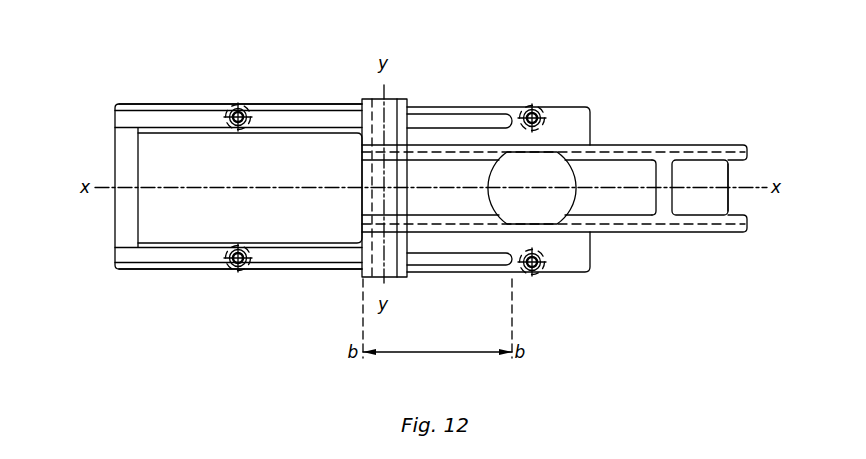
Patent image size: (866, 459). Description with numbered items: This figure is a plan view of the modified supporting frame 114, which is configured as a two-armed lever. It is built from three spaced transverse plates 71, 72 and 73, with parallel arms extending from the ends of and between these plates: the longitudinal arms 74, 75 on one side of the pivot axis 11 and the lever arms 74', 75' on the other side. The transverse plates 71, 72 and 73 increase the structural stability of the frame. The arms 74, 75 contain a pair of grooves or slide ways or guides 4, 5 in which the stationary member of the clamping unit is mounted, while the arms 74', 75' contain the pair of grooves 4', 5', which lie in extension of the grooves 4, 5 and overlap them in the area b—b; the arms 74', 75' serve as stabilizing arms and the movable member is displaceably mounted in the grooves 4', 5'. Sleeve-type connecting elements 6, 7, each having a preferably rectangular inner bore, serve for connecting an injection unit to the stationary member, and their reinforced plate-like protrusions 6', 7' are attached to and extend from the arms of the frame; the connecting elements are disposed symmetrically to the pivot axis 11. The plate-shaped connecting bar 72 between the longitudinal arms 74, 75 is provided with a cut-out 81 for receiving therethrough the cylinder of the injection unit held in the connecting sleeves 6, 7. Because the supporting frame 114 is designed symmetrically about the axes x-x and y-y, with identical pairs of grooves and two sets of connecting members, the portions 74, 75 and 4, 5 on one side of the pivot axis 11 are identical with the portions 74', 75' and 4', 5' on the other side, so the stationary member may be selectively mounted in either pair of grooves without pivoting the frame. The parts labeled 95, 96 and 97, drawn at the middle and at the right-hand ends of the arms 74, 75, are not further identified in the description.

The transverse plate 71 is at (128, 217).
The arm 75' is at (240, 63).
The groove 5' is at (238, 66).
The plate-like protrusion 7' is at (238, 76).
The arm 74' is at (240, 315).
The groove 4' is at (238, 313).
The plate-like protrusion 6' is at (238, 303).
The clamping block 95 is at (365, 99).
The pivot axis 11 is at (387, 98).
The supporting frame 114 is at (432, 82).
The bearing block 97 is at (580, 125).
The connecting element 7 is at (532, 77).
The bearing block 96 is at (574, 262).
The connecting element 6 is at (546, 305).
The cut-out 81 is at (560, 175).
The arm 75 is at (554, 91).
The groove 5 is at (553, 91).
The arm 74 is at (554, 288).
The groove 4 is at (553, 288).
The connecting bar 72 is at (622, 205).
The transverse plate 73 is at (720, 200).